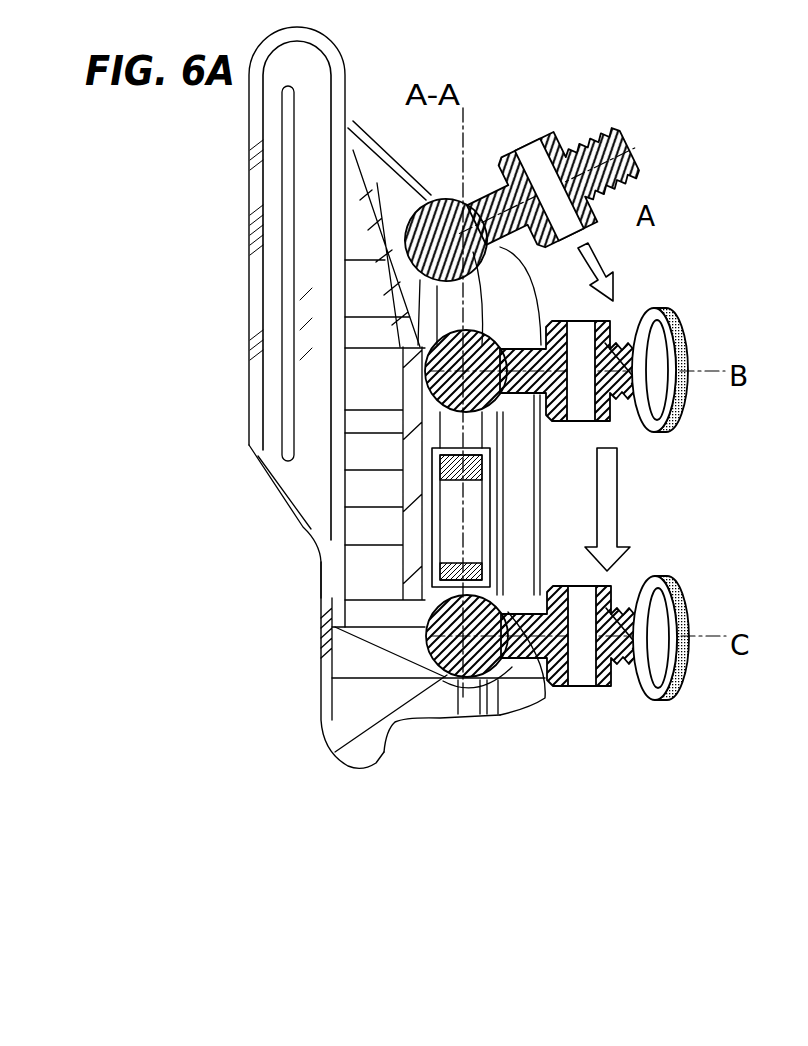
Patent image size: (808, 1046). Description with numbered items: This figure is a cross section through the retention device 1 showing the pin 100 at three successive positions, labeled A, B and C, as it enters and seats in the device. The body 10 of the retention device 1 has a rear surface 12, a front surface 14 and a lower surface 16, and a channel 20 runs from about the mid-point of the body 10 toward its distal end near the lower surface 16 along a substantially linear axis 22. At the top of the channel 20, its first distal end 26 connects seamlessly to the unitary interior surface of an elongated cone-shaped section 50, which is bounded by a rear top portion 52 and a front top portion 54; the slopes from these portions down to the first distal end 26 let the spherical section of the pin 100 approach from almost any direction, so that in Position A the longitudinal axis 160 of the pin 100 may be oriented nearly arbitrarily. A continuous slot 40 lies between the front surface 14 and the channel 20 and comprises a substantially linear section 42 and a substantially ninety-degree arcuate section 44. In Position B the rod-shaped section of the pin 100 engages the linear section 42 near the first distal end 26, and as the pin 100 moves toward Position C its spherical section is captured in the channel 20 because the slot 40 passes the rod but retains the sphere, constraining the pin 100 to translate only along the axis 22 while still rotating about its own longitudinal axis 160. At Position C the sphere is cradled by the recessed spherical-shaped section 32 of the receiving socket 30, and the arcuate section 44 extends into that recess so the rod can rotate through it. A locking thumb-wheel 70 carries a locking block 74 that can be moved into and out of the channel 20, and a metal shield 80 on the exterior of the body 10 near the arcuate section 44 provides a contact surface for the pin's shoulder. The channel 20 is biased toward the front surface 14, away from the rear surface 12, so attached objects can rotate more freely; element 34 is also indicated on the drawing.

The retention device 1 is at (377, 408).
The body 10 is at (316, 696).
The rear surface 12 is at (313, 670).
The front surface 14 is at (536, 448).
The lower surface 16 is at (442, 722).
The channel 20 is at (450, 425).
The substantially linear axis 22 is at (466, 148).
The first distal end 26 is at (418, 348).
The receiving socket 30 is at (437, 667).
The recessed spherical-shaped section 32 is at (423, 642).
The rib 34 is at (375, 662).
The continuous slot 40 is at (525, 480).
The substantially linear section 42 is at (525, 505).
The substantially 90-degree arcuate section 44 is at (505, 668).
The elongated cone-shaped section 50 is at (388, 180).
The rear top portion 52 is at (349, 132).
The front top portion 54 is at (507, 268).
The locking thumb-wheel 70 is at (470, 548).
The locking block 74 is at (470, 528).
The metal shield 80 is at (513, 676).
The pin 100 is at (606, 152).
The longitudinal axis 160 is at (632, 152).